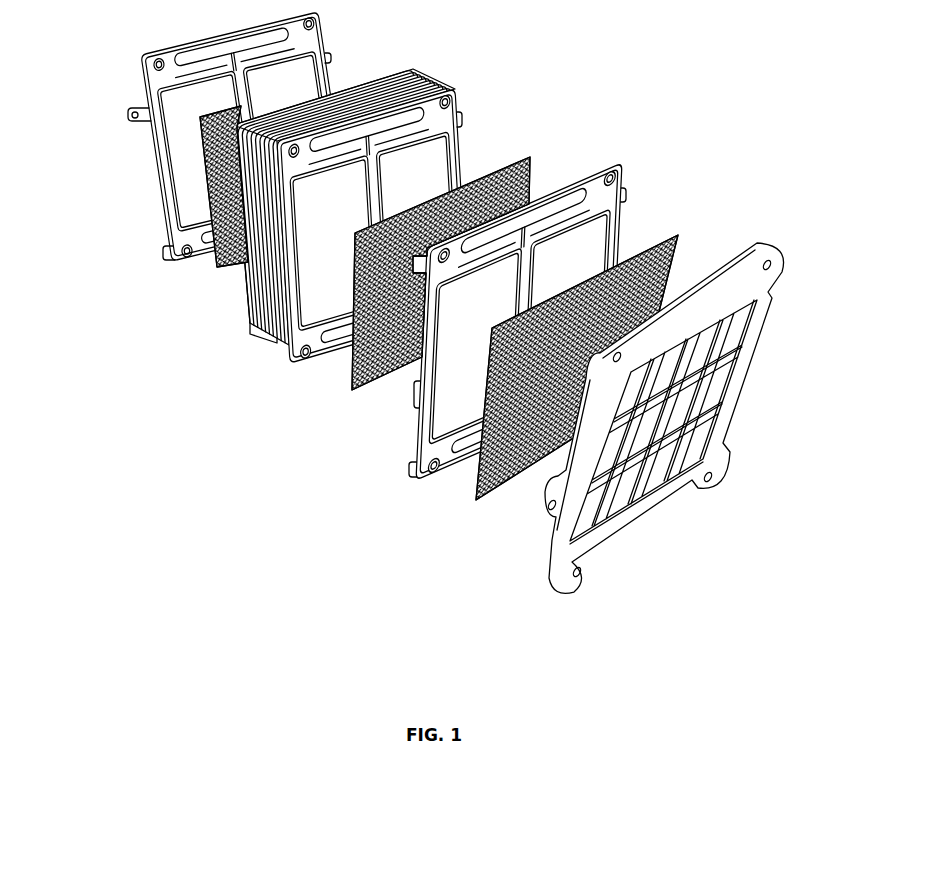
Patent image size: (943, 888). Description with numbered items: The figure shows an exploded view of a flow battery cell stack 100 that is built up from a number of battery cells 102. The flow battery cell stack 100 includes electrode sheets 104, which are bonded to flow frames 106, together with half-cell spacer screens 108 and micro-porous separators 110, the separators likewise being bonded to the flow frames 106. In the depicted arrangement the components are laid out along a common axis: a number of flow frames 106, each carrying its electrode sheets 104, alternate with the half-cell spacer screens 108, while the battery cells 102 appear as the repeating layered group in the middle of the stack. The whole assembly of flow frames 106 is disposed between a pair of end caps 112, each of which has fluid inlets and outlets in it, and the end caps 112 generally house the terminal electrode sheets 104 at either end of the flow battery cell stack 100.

The flow battery cell stack 100 is at (99, 87).
The battery cells 102 is at (262, 375).
The electrode sheets 104 is at (277, 80).
The flow frames 106 is at (458, 106).
The half-cell spacer screens 108 is at (527, 197).
The micro-porous separators 110 is at (619, 229).
The end caps 112 is at (180, 257).